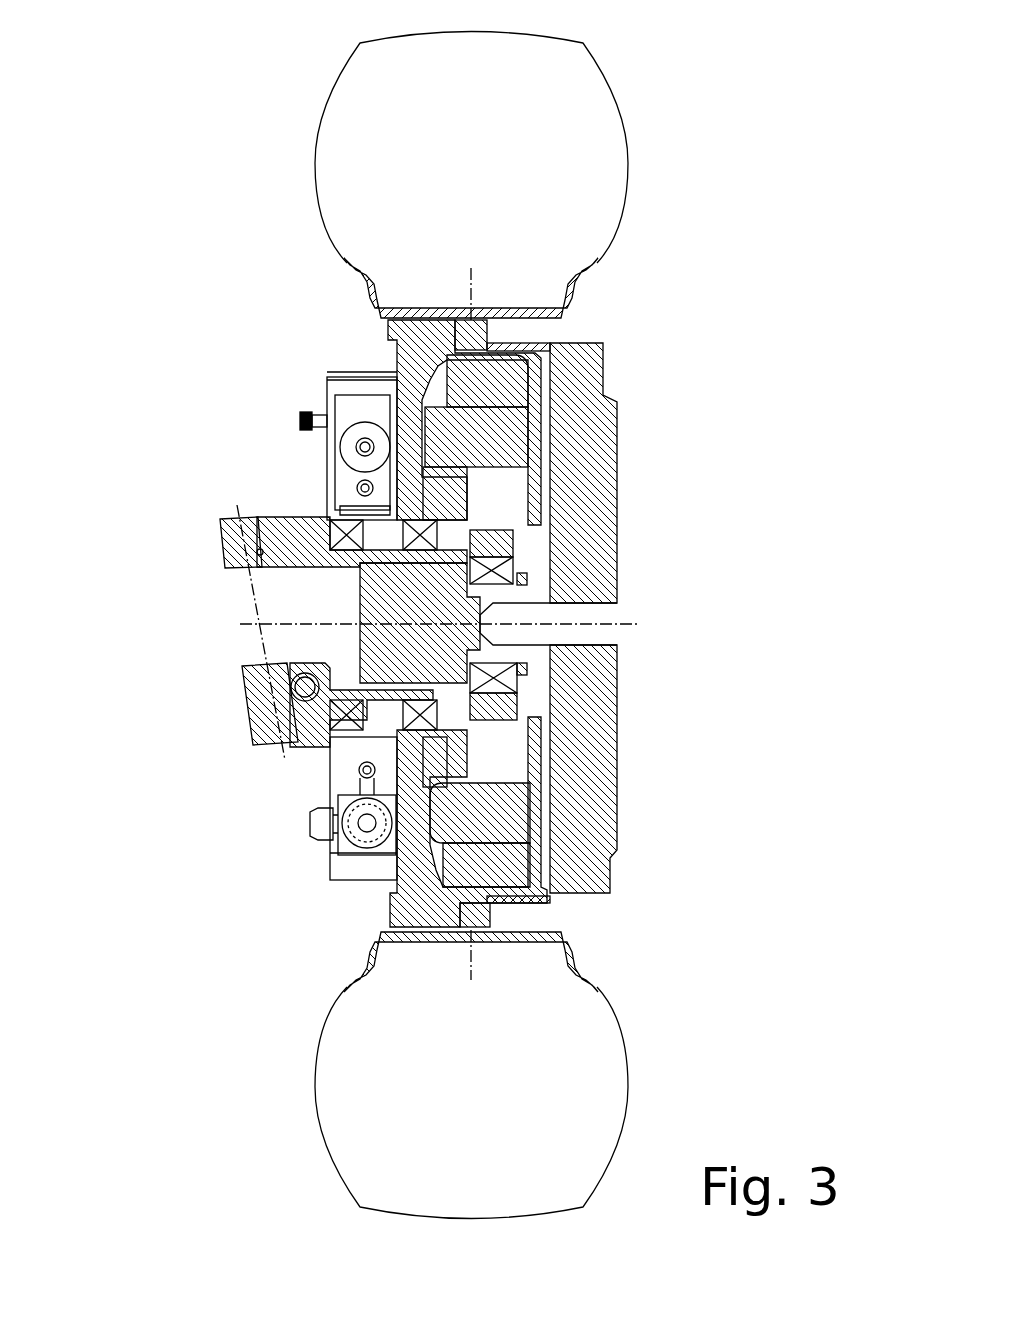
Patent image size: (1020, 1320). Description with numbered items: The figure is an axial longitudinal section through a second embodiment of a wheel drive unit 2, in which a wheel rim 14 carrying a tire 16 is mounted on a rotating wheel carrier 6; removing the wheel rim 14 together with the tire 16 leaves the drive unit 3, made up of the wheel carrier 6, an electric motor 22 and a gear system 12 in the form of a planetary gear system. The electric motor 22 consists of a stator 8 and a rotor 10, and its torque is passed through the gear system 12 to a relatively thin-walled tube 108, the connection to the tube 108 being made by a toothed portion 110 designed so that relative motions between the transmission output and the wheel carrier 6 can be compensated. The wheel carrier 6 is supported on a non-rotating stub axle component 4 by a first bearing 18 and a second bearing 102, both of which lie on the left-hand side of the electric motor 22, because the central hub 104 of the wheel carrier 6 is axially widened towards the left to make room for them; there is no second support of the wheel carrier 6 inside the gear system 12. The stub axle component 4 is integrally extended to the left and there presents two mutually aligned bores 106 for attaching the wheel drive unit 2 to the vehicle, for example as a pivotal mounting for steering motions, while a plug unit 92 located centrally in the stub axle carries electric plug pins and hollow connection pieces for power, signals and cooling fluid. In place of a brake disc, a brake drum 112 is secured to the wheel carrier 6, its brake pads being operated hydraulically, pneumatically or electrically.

The wheel drive unit 2 is at (539, 625).
The drive unit 3 is at (438, 617).
The stub axle component 4 is at (357, 690).
The wheel carrier 6 is at (388, 333).
The stator 8 is at (498, 428).
The rotor 10 is at (522, 876).
The gear system 12 is at (603, 532).
The wheel rim 14 is at (578, 296).
The tire 16 is at (678, 162).
The first bearing 18 is at (400, 531).
The electric motor 22 is at (430, 890).
The plug unit 92 is at (387, 638).
The second bearing 102 is at (335, 715).
The central hub 104 is at (377, 736).
The bores 106 is at (233, 534).
The thin-walled tube 108 is at (508, 342).
The toothed portion 110 is at (548, 349).
The brake drum 112 is at (340, 368).